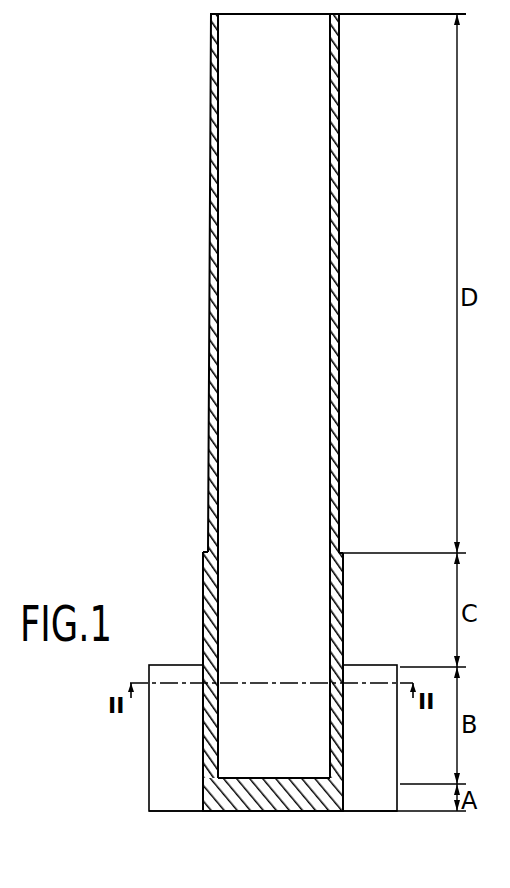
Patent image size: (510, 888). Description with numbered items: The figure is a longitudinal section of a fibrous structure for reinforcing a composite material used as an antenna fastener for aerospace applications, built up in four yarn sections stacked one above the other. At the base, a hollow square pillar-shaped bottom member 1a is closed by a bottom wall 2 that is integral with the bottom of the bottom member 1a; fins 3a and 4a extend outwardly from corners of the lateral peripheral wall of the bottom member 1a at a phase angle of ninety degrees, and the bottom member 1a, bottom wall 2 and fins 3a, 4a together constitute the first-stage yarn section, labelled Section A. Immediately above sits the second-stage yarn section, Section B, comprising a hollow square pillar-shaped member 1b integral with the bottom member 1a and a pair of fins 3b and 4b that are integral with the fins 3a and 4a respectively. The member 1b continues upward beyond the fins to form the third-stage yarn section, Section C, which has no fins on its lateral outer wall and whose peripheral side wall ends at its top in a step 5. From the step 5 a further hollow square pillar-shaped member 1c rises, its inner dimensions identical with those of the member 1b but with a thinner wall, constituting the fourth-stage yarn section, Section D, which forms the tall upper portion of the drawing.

The hollow square pillar-shaped bottom member 1a is at (210, 803).
The hollow square pillar-shaped member 1b is at (216, 720).
The hollow square pillar-shaped member 1c is at (340, 413).
The bottom wall 2 is at (264, 808).
The fin 3a is at (175, 803).
The fin 3b is at (154, 726).
The fin 4a is at (367, 806).
The fin 4b is at (392, 735).
The step 5 is at (342, 553).